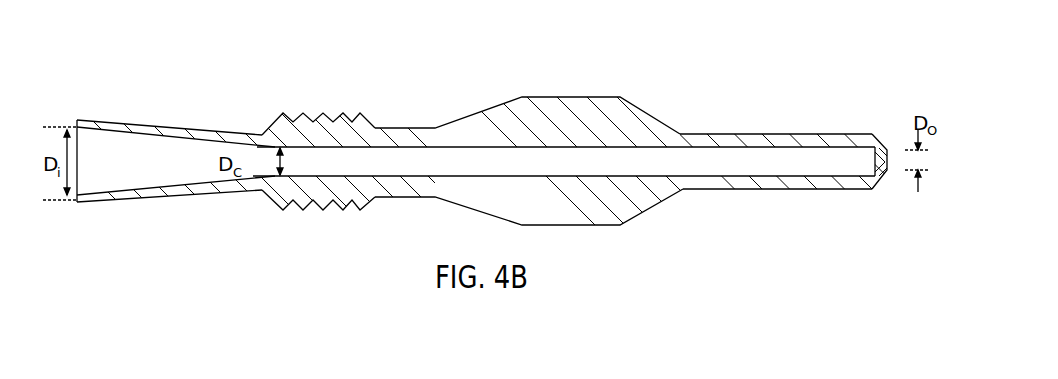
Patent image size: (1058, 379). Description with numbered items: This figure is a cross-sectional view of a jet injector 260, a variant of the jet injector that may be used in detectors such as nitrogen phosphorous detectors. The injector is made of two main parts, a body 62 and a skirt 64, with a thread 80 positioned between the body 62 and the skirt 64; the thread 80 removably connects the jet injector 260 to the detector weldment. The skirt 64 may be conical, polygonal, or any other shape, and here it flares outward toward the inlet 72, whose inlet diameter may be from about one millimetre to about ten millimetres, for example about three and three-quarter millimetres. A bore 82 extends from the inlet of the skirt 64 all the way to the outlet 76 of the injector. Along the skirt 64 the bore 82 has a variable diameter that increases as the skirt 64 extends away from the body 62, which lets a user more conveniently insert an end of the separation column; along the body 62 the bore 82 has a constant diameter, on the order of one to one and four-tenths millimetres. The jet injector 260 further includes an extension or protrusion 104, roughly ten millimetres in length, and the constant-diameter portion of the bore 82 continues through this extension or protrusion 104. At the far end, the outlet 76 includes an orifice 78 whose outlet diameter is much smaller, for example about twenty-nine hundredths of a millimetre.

The jet injector 260 is at (532, 156).
The skirt 64 is at (198, 112).
The inlet 72 is at (163, 185).
The thread 80 is at (331, 114).
The body 62 is at (593, 97).
The bore 82 is at (722, 162).
The extension or protrusion 104 is at (795, 135).
The outlet 76 is at (892, 168).
The orifice 78 is at (875, 165).